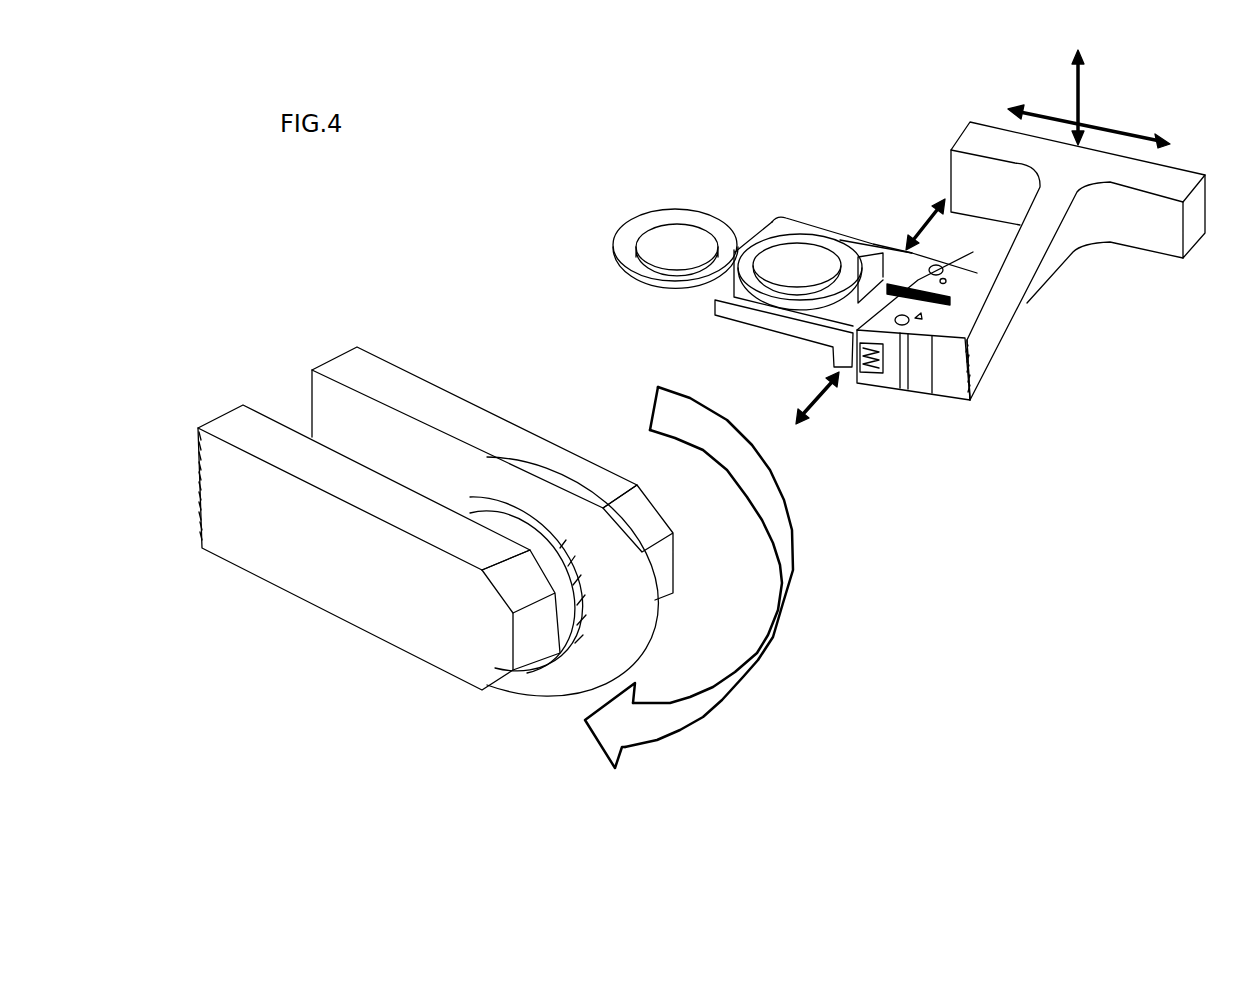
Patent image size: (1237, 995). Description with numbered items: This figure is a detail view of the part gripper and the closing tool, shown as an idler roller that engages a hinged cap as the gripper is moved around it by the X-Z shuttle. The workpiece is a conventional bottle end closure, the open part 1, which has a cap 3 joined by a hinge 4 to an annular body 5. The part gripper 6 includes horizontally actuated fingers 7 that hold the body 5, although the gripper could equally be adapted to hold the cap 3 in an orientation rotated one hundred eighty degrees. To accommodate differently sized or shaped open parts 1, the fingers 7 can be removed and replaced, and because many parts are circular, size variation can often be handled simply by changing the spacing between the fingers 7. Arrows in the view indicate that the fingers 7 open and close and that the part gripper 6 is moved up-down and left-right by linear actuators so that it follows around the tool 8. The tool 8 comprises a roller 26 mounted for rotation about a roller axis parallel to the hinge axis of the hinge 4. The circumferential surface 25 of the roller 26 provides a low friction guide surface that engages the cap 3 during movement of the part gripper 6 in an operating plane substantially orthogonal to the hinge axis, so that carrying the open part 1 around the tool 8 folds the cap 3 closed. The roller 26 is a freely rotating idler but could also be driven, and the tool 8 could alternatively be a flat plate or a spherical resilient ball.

The open part 1 is at (693, 188).
The cap 3 is at (638, 223).
The hinge 4 is at (734, 258).
The annular body 5 is at (812, 242).
The part gripper 6 is at (1027, 302).
The fingers 7 is at (878, 245).
The tool 8 is at (433, 368).
The circumferential surface 25 is at (553, 497).
The roller 26 is at (642, 608).